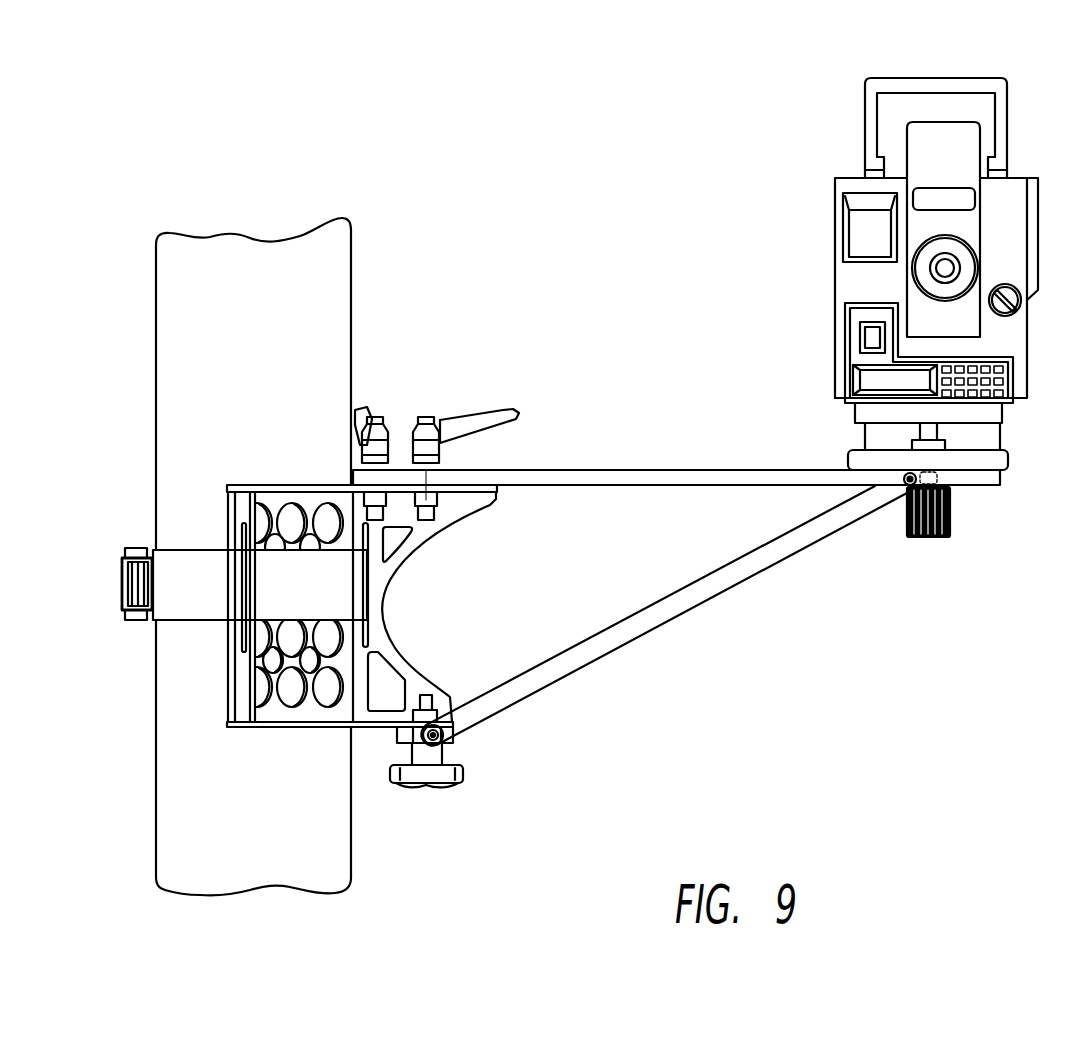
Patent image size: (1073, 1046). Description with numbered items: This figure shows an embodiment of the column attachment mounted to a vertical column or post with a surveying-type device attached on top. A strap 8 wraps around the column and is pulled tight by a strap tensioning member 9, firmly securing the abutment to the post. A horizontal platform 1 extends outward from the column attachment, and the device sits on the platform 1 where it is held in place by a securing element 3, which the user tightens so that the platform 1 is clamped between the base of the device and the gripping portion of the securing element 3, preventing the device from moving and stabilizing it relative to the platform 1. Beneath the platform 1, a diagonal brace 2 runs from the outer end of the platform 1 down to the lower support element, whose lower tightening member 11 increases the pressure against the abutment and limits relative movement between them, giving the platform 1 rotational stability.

The platform 1 is at (615, 470).
The brace 2 is at (665, 627).
The securing element 3 is at (972, 514).
The strap 8 is at (193, 610).
The strap tensioning member 9 is at (128, 583).
The lower tightening member 11 is at (438, 787).